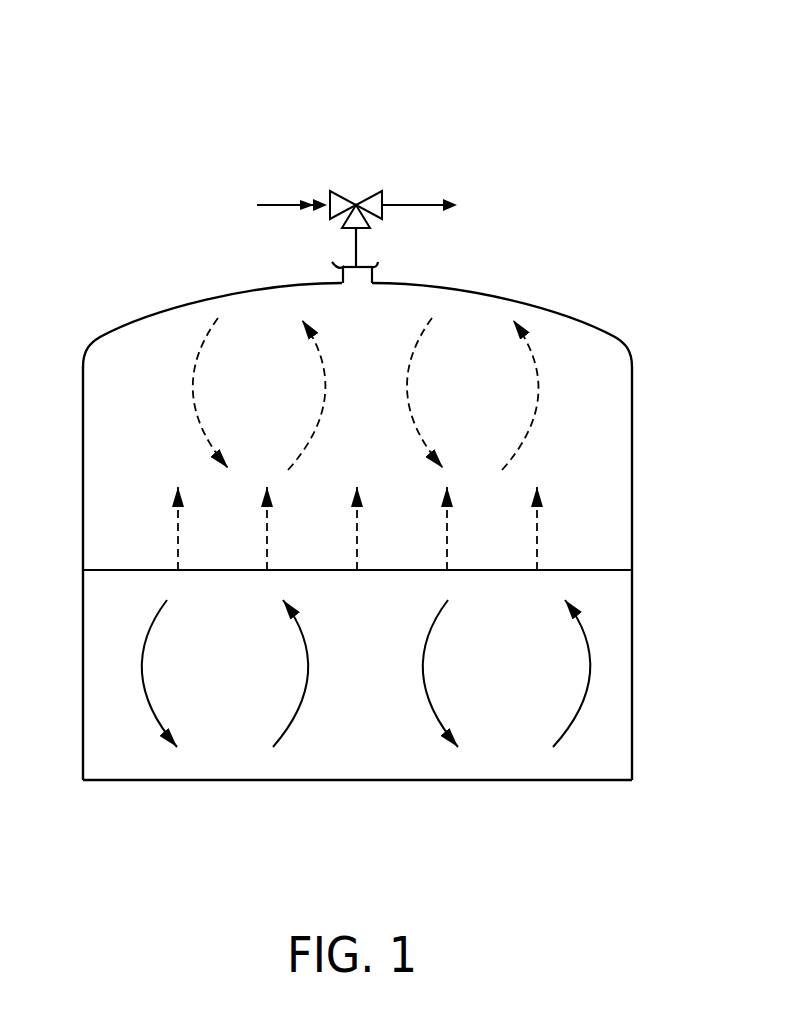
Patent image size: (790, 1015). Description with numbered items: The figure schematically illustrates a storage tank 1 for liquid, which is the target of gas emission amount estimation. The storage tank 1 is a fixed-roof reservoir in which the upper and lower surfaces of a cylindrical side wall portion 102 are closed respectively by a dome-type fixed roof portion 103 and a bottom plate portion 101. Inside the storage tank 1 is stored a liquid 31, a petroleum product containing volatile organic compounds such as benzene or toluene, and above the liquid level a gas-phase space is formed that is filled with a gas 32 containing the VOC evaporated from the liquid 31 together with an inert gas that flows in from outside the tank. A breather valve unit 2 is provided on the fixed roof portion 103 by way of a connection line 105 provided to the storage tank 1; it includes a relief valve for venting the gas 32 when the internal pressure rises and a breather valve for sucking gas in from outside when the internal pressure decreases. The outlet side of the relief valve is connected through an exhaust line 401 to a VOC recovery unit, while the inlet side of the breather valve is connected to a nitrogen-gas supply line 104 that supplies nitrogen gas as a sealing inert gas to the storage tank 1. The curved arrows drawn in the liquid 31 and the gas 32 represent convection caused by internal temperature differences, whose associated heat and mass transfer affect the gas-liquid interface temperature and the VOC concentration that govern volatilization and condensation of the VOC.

The storage tank 1 is at (113, 93).
The breather valve unit 2 is at (372, 190).
The liquid 31 is at (93, 653).
The gas 32 is at (93, 473).
The bottom plate portion 101 is at (585, 781).
The side wall portion 102 is at (633, 447).
The fixed roof portion 103 is at (140, 318).
The nitrogen-gas supply line 104 is at (280, 205).
The connection line 105 is at (358, 247).
The exhaust line 401 is at (407, 200).